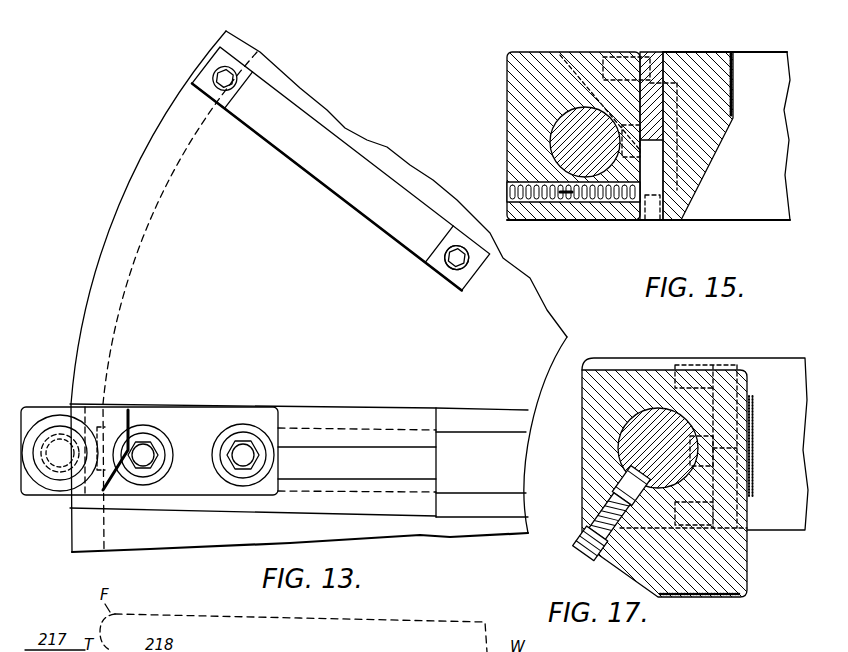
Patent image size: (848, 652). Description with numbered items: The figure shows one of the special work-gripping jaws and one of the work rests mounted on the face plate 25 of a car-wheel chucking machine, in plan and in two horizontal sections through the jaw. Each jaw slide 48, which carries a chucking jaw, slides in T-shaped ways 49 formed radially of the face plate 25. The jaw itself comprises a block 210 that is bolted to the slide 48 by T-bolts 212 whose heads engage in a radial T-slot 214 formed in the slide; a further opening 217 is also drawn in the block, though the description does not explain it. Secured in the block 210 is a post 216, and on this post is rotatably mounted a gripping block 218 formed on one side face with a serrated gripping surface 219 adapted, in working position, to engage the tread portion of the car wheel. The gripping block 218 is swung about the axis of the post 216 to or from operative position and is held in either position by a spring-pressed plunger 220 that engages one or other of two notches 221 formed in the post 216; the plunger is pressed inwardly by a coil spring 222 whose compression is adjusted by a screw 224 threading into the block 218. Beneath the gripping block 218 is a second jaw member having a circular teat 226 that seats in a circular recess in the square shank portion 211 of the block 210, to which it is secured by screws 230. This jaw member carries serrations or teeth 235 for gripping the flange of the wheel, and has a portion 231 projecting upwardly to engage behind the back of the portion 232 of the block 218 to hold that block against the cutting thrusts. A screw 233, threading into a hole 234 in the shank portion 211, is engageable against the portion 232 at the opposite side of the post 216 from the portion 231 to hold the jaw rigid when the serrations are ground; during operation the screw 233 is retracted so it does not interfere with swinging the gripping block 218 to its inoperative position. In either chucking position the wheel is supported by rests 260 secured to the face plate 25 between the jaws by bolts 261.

In FIG. 13, the face plate 25 is at (462, 528).
In FIG. 13, the jaw slide 48 is at (356, 498).
In FIG. 13, the T-shaped ways 49 is at (508, 468).
In FIG. 13, the block 210 is at (180, 413).
In FIG. 15, the block 210 is at (762, 210).
In FIG. 15, the square shank portion 211 is at (523, 102).
In FIG. 13, the T-bolts 212 is at (145, 452).
In FIG. 13, the radial T-slot 214 is at (362, 458).
In FIG. 15, the post 216 is at (557, 130).
In FIG. 17, the post 216 is at (640, 422).
In FIG. 13, the bore 217 is at (55, 478).
In FIG. 13, the gripping block 218 is at (30, 420).
In FIG. 15, the gripping block 218 is at (706, 167).
In FIG. 17, the gripping block 218 is at (735, 558).
In FIG. 13, the serrated gripping surface 219 is at (134, 422).
In FIG. 15, the serrated gripping surface 219 is at (736, 116).
In FIG. 17, the serrated gripping surface 219 is at (700, 598).
In FIG. 17, the spring-pressed plunger 220 is at (630, 492).
In FIG. 17, the notches 221 is at (697, 445).
In FIG. 17, the coil spring 222 is at (617, 518).
In FIG. 17, the screw 224 is at (592, 554).
In FIG. 15, the circular teat 226 is at (560, 52).
In FIG. 15, the screws 230 is at (636, 55).
In FIG. 17, the screws 230 is at (715, 365).
In FIG. 15, the upwardly projecting portion 231 is at (660, 55).
In FIG. 15, the portion of the gripping block 232 is at (657, 224).
In FIG. 15, the screw 233 is at (590, 183).
In FIG. 15, the hole 234 is at (510, 190).
In FIG. 17, the serrations or teeth 235 is at (755, 430).
In FIG. 13, the rests 260 is at (346, 194).
In FIG. 13, the bolts 261 is at (452, 263).